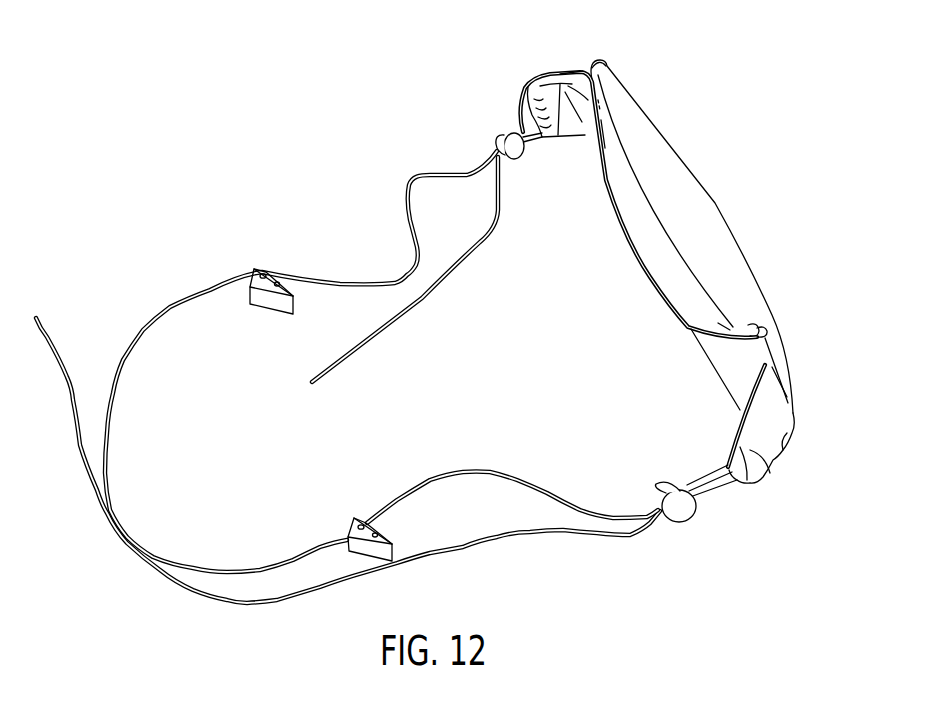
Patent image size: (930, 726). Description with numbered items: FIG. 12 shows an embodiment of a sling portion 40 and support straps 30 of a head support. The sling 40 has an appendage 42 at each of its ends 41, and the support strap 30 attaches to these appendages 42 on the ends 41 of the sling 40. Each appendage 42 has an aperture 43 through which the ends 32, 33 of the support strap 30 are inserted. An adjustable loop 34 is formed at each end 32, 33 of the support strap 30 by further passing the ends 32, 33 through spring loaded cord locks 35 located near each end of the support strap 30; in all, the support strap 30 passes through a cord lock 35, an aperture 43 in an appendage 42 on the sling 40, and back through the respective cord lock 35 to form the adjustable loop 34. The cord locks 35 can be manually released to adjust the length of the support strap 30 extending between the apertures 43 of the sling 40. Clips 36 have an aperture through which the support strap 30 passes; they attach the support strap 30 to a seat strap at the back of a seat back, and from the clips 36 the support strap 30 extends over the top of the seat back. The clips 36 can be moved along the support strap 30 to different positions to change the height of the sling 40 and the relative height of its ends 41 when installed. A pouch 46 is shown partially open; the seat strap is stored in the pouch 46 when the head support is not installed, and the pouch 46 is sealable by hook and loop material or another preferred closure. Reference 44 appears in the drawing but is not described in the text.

The support strap 30 is at (401, 276).
The end of support strap 32 is at (318, 387).
The end of support strap 33 is at (43, 320).
The adjustable loop 34 is at (518, 104).
The spring loaded cord lock 35 is at (498, 136).
The clip 36 is at (268, 302).
The sling portion 40 is at (716, 203).
The end of sling 41 is at (769, 367).
The appendage 42 is at (575, 73).
The aperture 43 is at (533, 88).
The top flap 44 is at (593, 62).
The pouch 46 is at (645, 203).